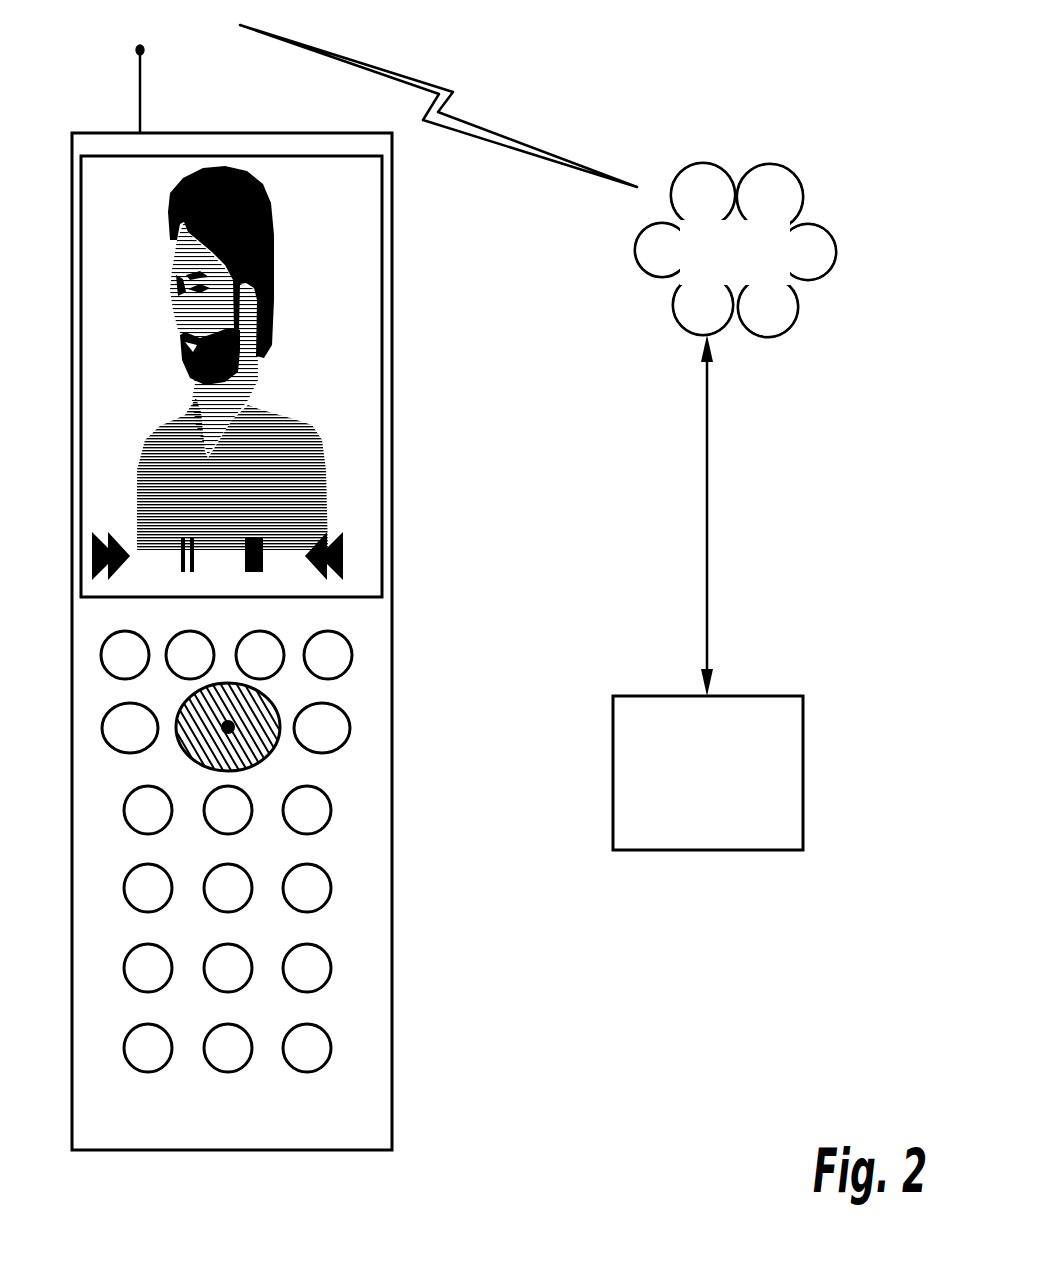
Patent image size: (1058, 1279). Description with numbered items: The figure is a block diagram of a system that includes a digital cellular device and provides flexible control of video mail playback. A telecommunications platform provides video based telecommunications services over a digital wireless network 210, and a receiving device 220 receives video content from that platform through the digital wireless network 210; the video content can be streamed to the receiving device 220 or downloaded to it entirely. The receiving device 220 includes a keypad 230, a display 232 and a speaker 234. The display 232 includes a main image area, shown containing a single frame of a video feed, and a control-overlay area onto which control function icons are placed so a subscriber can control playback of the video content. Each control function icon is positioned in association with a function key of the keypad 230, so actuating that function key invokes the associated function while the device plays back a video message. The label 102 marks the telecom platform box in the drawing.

The receiving device 220 is at (393, 888).
The display 232 is at (378, 332).
The keypad 230 is at (328, 1018).
The speaker 234 is at (178, 713).
The digital wireless network 210 is at (673, 312).
The telecom platform 102 is at (802, 738).